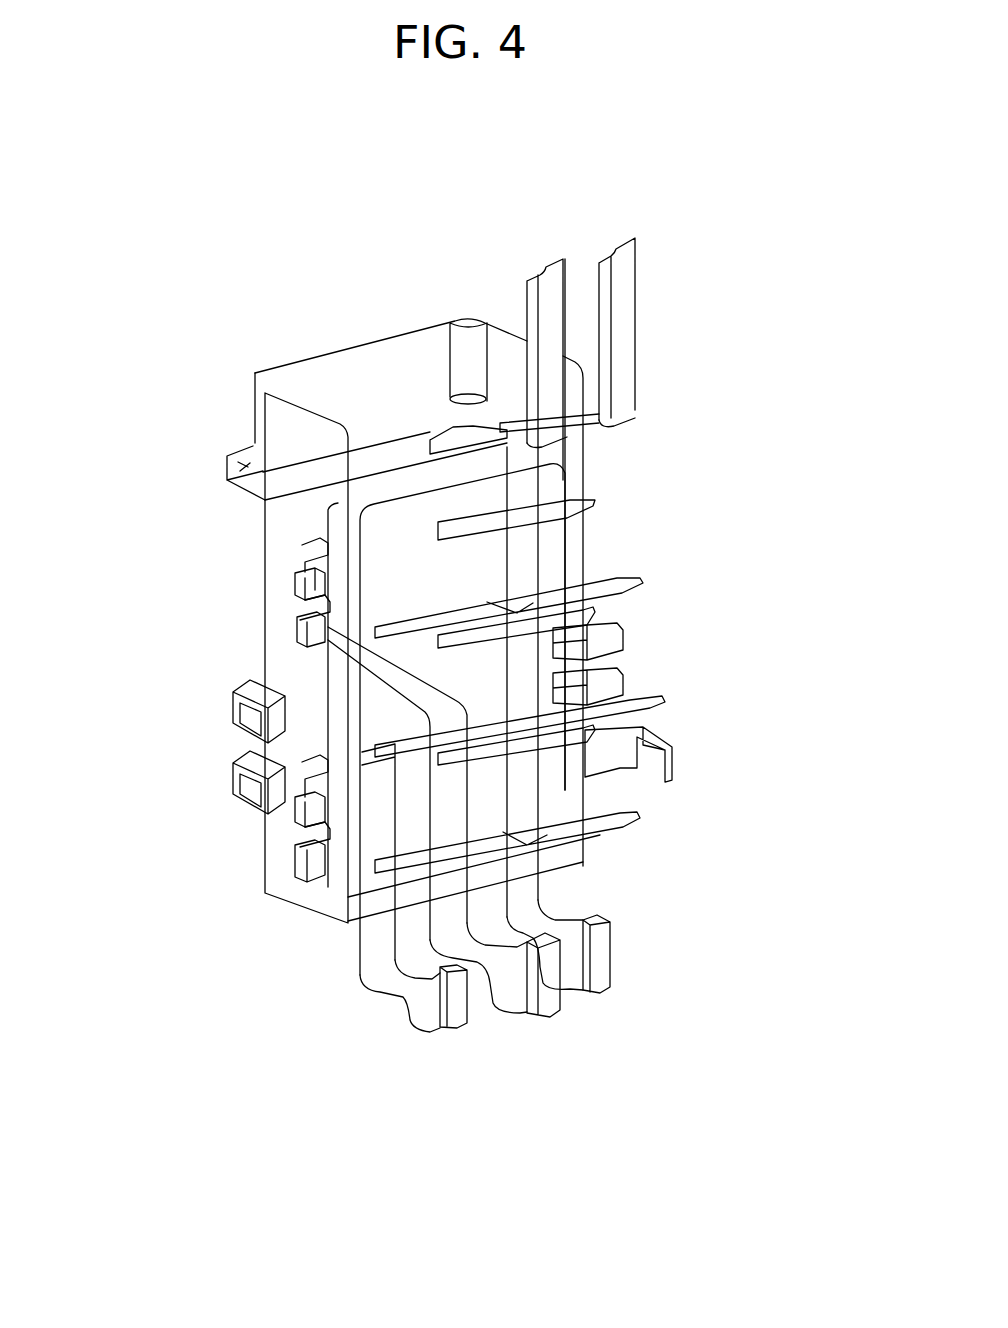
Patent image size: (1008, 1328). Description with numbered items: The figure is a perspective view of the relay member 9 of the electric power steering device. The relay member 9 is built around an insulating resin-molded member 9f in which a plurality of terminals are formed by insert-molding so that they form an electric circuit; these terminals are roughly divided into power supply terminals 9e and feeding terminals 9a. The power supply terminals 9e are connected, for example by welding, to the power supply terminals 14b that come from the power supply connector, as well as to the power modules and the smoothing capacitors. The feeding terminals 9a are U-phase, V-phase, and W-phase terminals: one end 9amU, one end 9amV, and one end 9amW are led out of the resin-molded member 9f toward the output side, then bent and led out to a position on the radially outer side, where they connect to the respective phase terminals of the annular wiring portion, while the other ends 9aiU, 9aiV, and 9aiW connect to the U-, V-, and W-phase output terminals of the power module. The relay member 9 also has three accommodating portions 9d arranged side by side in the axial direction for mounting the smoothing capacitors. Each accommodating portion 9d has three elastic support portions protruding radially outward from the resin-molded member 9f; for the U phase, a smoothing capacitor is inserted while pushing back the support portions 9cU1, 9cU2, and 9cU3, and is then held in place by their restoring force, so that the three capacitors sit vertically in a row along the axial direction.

The relay member 9 is at (207, 463).
The resin-molded member 9f is at (362, 366).
The power supply terminals 14b is at (637, 267).
The accommodating portions 9d is at (527, 551).
The power supply terminals 9e is at (620, 657).
The support portion 9cU3 is at (620, 725).
The support portion 9cU1 is at (623, 808).
The support portion 9cU2 is at (356, 932).
The another end of V-phase feeding terminal 9aiV is at (233, 727).
The another end of U-phase feeding terminal 9aiU is at (233, 788).
The another end of W-phase feeding terminal 9aiW is at (677, 760).
The feeding terminals 9a is at (552, 912).
The one end of U-phase feeding terminal 9amU is at (467, 1000).
The one end of V-phase feeding terminal 9amV is at (560, 1000).
The one end of W-phase feeding terminal 9amW is at (605, 957).